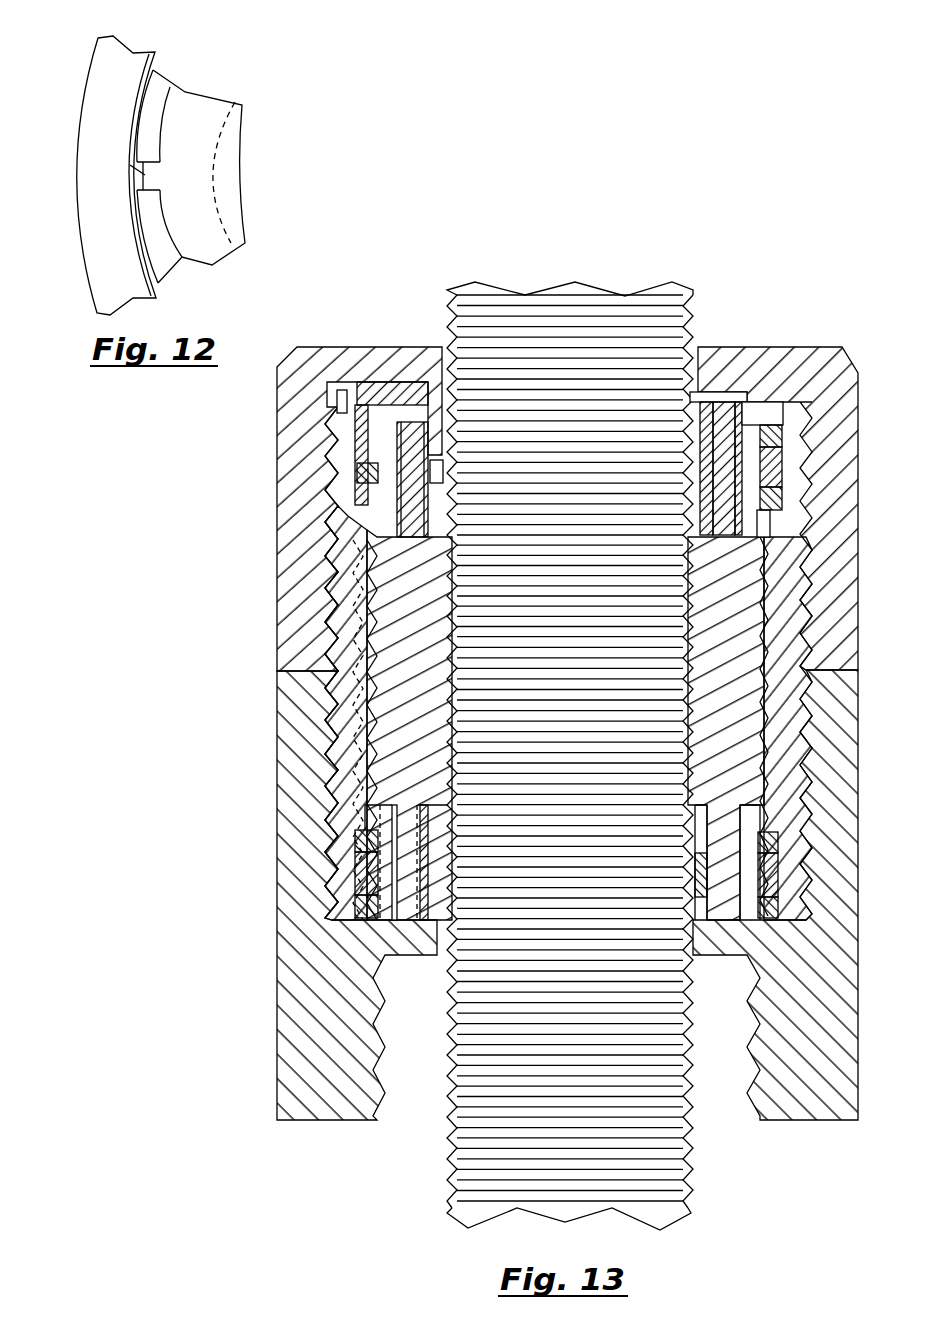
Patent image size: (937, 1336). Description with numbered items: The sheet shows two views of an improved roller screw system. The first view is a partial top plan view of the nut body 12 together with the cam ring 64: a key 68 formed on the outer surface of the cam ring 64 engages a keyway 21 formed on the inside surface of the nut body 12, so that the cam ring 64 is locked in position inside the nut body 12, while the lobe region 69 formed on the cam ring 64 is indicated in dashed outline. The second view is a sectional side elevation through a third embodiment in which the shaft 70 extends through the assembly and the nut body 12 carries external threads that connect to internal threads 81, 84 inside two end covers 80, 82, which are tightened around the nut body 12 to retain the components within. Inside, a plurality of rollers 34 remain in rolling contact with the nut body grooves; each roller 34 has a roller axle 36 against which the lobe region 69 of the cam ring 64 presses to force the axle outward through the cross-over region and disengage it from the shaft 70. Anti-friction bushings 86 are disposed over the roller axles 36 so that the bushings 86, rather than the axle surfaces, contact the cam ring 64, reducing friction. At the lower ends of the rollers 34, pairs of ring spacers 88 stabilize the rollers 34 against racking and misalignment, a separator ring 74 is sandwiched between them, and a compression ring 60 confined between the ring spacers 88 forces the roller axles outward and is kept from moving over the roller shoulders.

In FIG. 12, the nut body 12 is at (103, 57).
In FIG. 12, the cam ring 64 is at (198, 102).
In FIG. 13, the cam ring 64 is at (360, 398).
In FIG. 12, the lobe region 69 is at (222, 165).
In FIG. 12, the key 68 is at (143, 177).
In FIG. 12, the keyway 21 is at (135, 170).
In FIG. 13, the shaft 70 is at (660, 285).
In FIG. 13, the end cover 80 is at (277, 458).
In FIG. 13, the end cover 82 is at (277, 712).
In FIG. 13, the rollers 34 is at (393, 613).
In FIG. 13, the internal threads 81 is at (330, 580).
In FIG. 13, the internal threads 84 is at (330, 770).
In FIG. 13, the roller axle 36 is at (410, 435).
In FIG. 13, the anti-friction bushings 86 is at (398, 497).
In FIG. 13, the separator ring 74 is at (365, 878).
In FIG. 13, the ring spacers 88 is at (362, 845).
In FIG. 13, the compression ring 60 is at (436, 905).